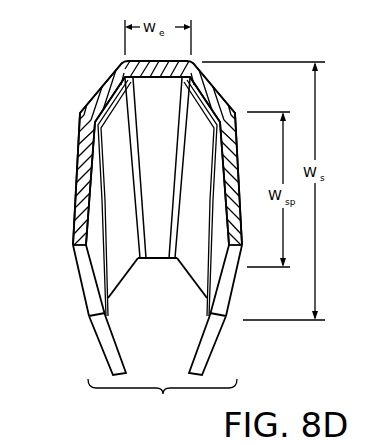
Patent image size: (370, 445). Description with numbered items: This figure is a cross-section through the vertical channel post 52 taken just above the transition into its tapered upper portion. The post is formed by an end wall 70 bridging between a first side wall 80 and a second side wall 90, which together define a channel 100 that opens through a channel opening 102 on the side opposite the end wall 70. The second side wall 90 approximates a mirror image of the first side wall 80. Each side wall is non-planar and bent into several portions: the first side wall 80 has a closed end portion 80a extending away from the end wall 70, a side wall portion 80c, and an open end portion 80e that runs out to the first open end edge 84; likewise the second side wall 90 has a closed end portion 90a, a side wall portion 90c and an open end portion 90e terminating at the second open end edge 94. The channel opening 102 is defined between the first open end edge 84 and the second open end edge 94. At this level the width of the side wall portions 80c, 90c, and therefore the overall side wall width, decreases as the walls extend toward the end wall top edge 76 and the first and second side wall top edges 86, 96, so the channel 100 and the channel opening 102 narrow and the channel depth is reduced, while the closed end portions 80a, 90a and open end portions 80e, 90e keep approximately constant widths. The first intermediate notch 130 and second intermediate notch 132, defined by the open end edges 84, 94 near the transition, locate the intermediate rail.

The vertical channel post 52 is at (258, 28).
The end wall 70 is at (172, 60).
The end wall top edge 76 is at (158, 259).
The first side wall 80 is at (238, 163).
The closed end portion 80a is at (214, 88).
The side wall portion 80c is at (238, 214).
The open end portion 80e is at (233, 293).
The first open end edge 84 is at (214, 318).
The first side wall top edge 86 is at (191, 280).
The second side wall 90 is at (78, 197).
The closed end portion 90a is at (100, 89).
The side wall portion 90c is at (78, 162).
The open end portion 90e is at (82, 290).
The second open end edge 94 is at (97, 316).
The second side wall top edge 96 is at (123, 280).
The channel 100 is at (172, 330).
The channel opening 102 is at (162, 399).
The first intermediate notch 130 is at (236, 266).
The second intermediate notch 132 is at (78, 265).